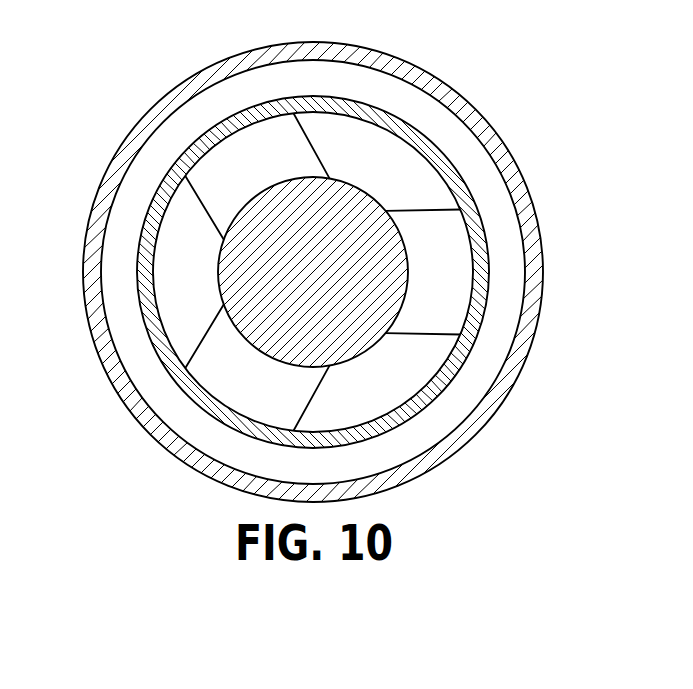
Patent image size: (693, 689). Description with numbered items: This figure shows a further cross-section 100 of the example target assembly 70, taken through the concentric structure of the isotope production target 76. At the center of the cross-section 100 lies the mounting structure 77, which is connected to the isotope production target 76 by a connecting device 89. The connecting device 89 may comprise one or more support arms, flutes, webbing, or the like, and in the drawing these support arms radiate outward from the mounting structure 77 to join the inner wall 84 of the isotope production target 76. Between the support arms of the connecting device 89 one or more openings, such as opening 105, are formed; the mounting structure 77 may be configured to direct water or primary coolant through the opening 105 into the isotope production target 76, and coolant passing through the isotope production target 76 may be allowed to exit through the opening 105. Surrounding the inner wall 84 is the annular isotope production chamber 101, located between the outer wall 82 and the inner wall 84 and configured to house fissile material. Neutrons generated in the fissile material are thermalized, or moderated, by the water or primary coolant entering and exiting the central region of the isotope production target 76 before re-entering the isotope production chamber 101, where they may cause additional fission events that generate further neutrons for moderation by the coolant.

The target assembly 70 is at (321, 258).
The isotope production target 76 is at (545, 272).
The mounting structure 77 is at (353, 361).
The outer wall 82 is at (346, 268).
The inner wall 84 is at (367, 103).
The connecting device 89 is at (311, 141).
The cross-section 100 is at (321, 258).
The isotope production chamber 101 is at (450, 408).
The opening 105 is at (180, 315).